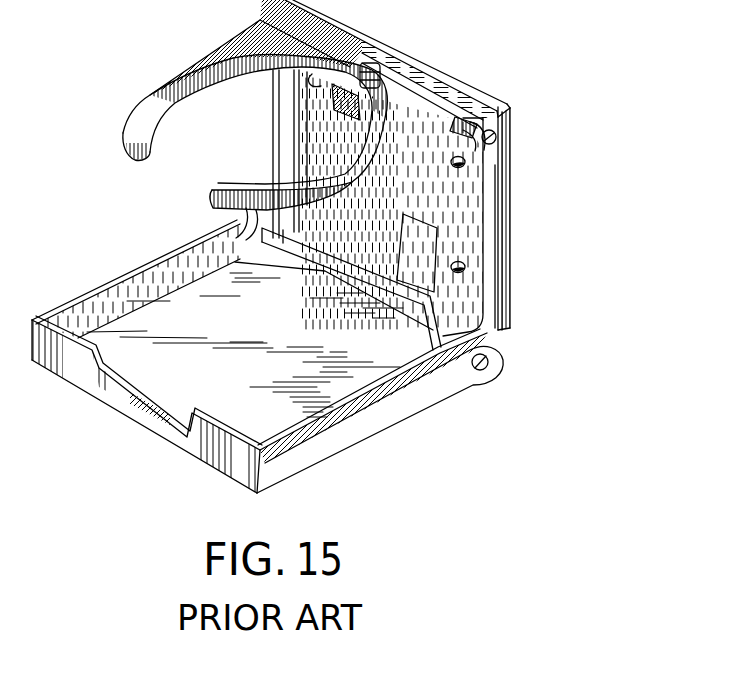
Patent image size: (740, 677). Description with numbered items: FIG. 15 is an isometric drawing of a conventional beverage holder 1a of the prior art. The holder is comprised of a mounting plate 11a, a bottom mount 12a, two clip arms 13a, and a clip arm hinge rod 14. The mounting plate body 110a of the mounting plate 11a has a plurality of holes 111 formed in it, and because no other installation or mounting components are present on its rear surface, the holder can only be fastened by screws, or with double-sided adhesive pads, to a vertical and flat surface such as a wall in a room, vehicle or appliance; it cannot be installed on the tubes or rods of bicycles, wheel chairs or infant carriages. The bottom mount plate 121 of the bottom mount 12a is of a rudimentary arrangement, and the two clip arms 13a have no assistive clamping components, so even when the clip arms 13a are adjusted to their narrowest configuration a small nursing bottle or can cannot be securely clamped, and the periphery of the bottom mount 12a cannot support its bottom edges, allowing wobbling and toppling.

The conventional beverage holder 1a is at (532, 321).
The mounting plate 11a is at (420, 41).
The clip arm hinge rod 14 is at (497, 114).
The mounting plate body 110a is at (461, 198).
The holes 111 is at (463, 266).
The clip arms 13a is at (207, 200).
The bottom mount plate 121 is at (343, 378).
The bottom mount 12a is at (444, 412).